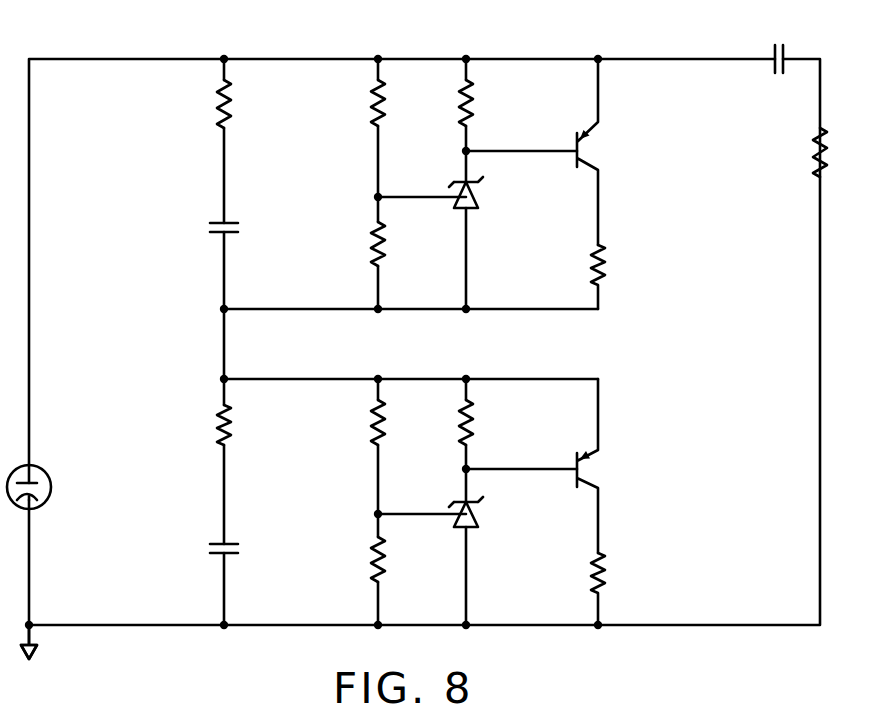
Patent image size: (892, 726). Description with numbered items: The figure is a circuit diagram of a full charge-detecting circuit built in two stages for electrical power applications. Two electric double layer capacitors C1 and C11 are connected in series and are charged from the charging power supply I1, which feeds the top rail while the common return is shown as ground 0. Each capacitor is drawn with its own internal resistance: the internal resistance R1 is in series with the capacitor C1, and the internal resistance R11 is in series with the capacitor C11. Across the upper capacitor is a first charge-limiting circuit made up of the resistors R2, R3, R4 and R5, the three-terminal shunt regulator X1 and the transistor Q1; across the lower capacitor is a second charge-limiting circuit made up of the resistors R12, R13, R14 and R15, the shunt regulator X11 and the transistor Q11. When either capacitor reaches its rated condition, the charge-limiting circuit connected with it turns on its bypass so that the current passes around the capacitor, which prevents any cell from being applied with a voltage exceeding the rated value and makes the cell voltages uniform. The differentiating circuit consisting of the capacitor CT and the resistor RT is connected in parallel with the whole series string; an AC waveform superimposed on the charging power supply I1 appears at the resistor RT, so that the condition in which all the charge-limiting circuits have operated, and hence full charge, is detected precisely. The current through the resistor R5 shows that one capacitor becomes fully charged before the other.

The internal resistance R1 is at (208, 105).
The electric double layer capacitor C1 is at (208, 226).
The resistor R2 is at (385, 112).
The resistor R3 is at (385, 250).
The resistor R4 is at (474, 97).
The three-terminal shunt regulator X1 is at (480, 199).
The transistor Q1 is at (598, 146).
The resistor R5 is at (606, 261).
The capacitor CT is at (779, 45).
The resistor RT is at (815, 147).
The charging power supply I1 is at (38, 505).
The internal resistance R11 is at (212, 425).
The electric double layer capacitor C11 is at (208, 550).
The resistor R12 is at (385, 428).
The resistor R13 is at (385, 565).
The resistor R14 is at (474, 416).
The three-terminal shunt regulator X11 is at (480, 530).
The transistor Q11 is at (598, 466).
The resistor R15 is at (606, 573).
The ground reference 0 is at (36, 651).